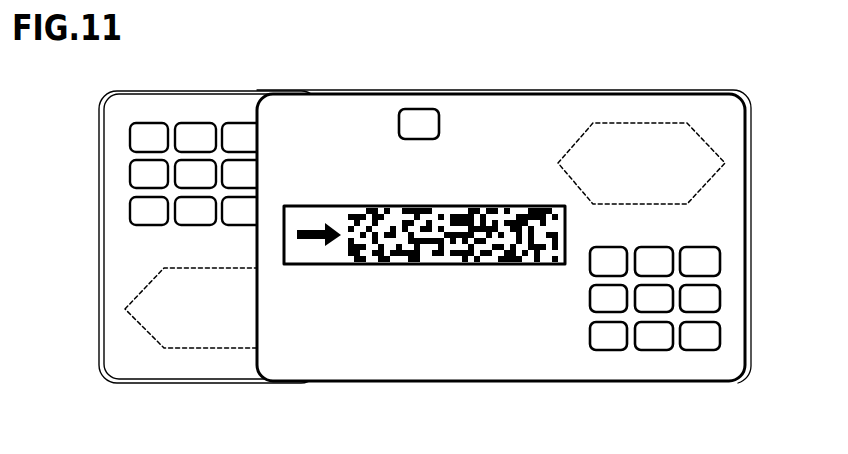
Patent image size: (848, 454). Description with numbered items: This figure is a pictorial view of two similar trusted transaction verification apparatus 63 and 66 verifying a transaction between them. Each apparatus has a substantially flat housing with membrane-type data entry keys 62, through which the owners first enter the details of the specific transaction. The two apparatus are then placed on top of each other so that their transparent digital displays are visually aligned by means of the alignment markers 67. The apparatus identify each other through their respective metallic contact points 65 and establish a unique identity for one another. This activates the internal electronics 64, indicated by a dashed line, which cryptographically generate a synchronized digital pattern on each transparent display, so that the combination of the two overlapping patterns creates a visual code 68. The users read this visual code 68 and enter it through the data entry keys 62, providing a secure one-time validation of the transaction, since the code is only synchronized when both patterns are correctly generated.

The data entry keys 62 is at (705, 336).
The housing 63 is at (722, 120).
The internal electronics 64 is at (617, 137).
The metallic contact point 65 is at (400, 110).
The trusted transaction verification apparatus 66 is at (132, 246).
The alignment marker 67 is at (306, 240).
The visual code 68 is at (400, 265).